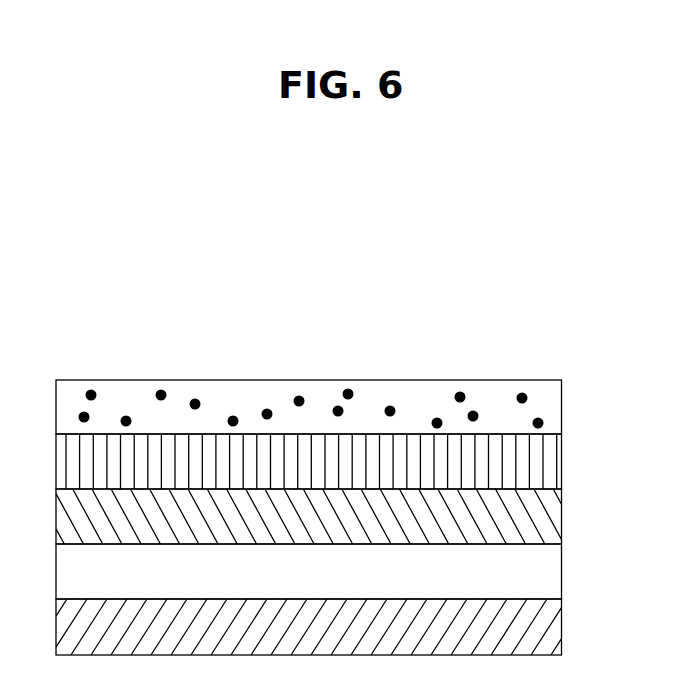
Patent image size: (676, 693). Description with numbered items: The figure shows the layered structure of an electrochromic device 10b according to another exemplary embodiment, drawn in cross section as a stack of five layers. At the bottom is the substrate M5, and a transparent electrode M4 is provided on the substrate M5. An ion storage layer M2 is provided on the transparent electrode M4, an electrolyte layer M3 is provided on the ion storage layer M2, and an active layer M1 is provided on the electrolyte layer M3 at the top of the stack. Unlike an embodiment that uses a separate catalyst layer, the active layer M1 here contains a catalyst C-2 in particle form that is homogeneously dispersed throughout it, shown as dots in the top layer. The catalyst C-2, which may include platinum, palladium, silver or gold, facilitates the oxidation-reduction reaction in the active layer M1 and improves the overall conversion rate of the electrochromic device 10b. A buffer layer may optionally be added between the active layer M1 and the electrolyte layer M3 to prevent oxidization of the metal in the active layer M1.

The electrochromic device 10b is at (80, 266).
The active layer M1 is at (561, 407).
The ion storage layer M2 is at (561, 517).
The electrolyte layer M3 is at (561, 461).
The transparent electrode M4 is at (561, 573).
The substrate M5 is at (561, 629).
The catalyst C-2 is at (460, 395).